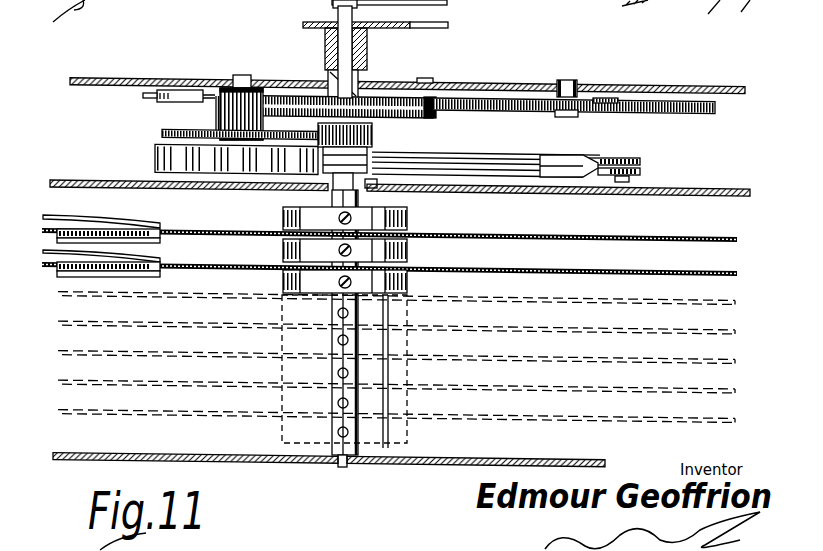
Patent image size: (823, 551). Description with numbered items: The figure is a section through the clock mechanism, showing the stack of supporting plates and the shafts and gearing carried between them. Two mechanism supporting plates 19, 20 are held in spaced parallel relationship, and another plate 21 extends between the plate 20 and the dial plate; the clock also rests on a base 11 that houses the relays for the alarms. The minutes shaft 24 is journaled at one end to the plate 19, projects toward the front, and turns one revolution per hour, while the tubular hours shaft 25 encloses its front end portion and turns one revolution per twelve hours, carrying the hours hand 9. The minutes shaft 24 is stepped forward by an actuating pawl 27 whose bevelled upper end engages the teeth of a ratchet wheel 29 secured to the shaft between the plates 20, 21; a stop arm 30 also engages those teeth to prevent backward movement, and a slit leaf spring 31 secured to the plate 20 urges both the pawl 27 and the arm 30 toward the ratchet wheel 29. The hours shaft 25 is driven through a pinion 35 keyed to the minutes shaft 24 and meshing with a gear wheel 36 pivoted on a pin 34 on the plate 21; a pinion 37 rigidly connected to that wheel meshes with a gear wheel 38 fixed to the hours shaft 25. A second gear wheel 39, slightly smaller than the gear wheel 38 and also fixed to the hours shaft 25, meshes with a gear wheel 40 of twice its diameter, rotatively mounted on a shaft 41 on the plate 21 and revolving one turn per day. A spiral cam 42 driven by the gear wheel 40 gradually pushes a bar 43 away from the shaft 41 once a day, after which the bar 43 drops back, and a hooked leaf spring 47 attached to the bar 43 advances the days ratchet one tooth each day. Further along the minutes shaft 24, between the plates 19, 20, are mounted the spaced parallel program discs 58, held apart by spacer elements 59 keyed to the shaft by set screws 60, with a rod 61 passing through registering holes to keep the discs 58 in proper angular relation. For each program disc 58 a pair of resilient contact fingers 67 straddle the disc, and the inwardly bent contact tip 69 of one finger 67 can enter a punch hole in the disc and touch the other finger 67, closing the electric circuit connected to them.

The hours hand 9 is at (423, 28).
The base 11 is at (686, 20).
The mechanism supporting plate 19 is at (441, 463).
The mechanism supporting plate 20 is at (78, 180).
The plate 21 is at (133, 66).
The minutes shaft 24 is at (342, 14).
The tubular hours shaft 25 is at (333, 68).
The actuating pawl 27 is at (378, 158).
The ratchet wheel 29 is at (157, 155).
The stop arm 30 is at (378, 186).
The slit leaf spring 31 is at (580, 160).
The pin 34 is at (262, 52).
The pinion 35 is at (370, 150).
The gear wheel 36 is at (165, 134).
The pinion 37 is at (220, 108).
The gear wheel 38 is at (428, 118).
The second gear wheel 39 is at (378, 96).
The gear wheel 40 is at (665, 112).
The shaft 41 is at (598, 62).
The spiral cam 42 is at (598, 98).
The bar 43 is at (148, 95).
The hooked leaf spring 47 is at (182, 93).
The program discs 58 is at (236, 262).
The spacer elements 59 is at (408, 215).
The set screws 60 is at (340, 220).
The rod 61 is at (392, 340).
The resilient contact fingers 67 is at (55, 221).
The contact tip 69 is at (160, 238).